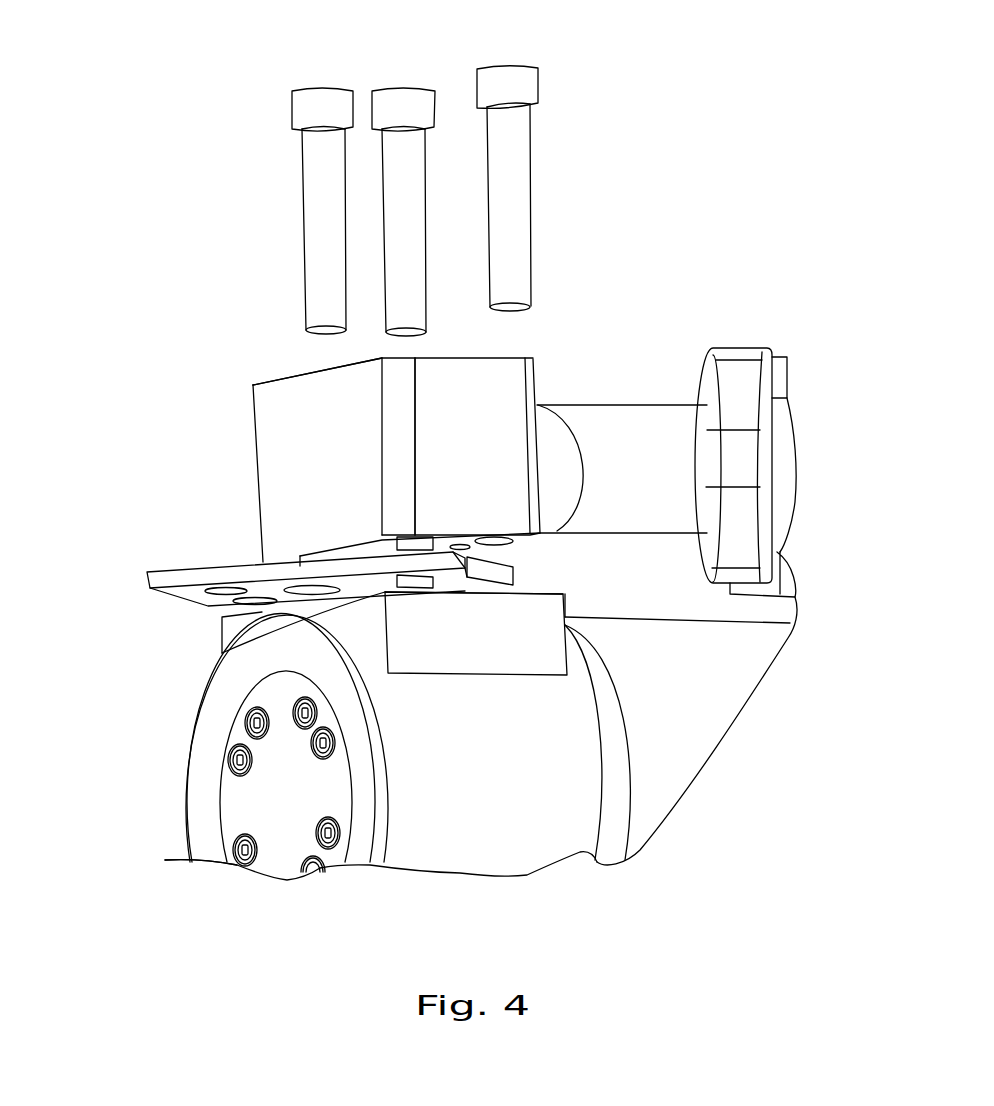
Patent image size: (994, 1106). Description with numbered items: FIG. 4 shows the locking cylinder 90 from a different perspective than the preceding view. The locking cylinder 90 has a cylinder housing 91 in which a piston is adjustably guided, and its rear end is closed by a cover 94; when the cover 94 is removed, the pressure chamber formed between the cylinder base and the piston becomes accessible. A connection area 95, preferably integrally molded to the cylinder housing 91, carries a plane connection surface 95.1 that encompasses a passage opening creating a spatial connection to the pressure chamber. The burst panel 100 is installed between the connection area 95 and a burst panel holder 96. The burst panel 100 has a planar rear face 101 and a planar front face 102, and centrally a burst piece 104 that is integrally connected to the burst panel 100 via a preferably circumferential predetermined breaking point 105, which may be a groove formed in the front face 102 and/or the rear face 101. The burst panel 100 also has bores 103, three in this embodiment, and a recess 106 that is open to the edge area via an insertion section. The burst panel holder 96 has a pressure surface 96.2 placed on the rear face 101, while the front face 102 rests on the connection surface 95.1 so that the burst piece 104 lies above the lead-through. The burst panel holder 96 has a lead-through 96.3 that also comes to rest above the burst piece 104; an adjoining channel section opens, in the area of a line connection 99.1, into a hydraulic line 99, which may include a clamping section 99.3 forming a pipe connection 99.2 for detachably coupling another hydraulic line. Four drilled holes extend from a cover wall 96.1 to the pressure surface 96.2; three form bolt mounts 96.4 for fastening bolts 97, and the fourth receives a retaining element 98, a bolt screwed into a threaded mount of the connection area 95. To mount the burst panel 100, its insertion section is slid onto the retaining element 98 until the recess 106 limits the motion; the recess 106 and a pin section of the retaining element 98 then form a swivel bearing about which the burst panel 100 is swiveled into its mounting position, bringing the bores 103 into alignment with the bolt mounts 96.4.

The locking cylinder 90 is at (503, 893).
The cylinder housing 91 is at (657, 788).
The cover 94 is at (237, 803).
The connection area 95 is at (502, 653).
The connection surface 95.1 is at (537, 587).
The burst panel holder 96 is at (250, 418).
The cover wall 96.1 is at (277, 378).
The pressure surface 96.2 is at (470, 545).
The lead-through 96.3 is at (352, 552).
The bolt mounts 96.4 is at (417, 514).
The fastening bolts 97 is at (330, 96).
The retaining element 98 is at (412, 537).
The hydraulic line 99 is at (692, 390).
The line connection 99.1 is at (492, 535).
The pipe connection 99.2 is at (773, 442).
The clamping section 99.3 is at (745, 378).
The burst panel 100 is at (143, 577).
The rear face 101 is at (195, 572).
The front face 102 is at (215, 592).
The bores 103 is at (237, 598).
The burst piece 104 is at (317, 585).
The predetermined breaking point 105 is at (300, 600).
The recess 106 is at (472, 565).